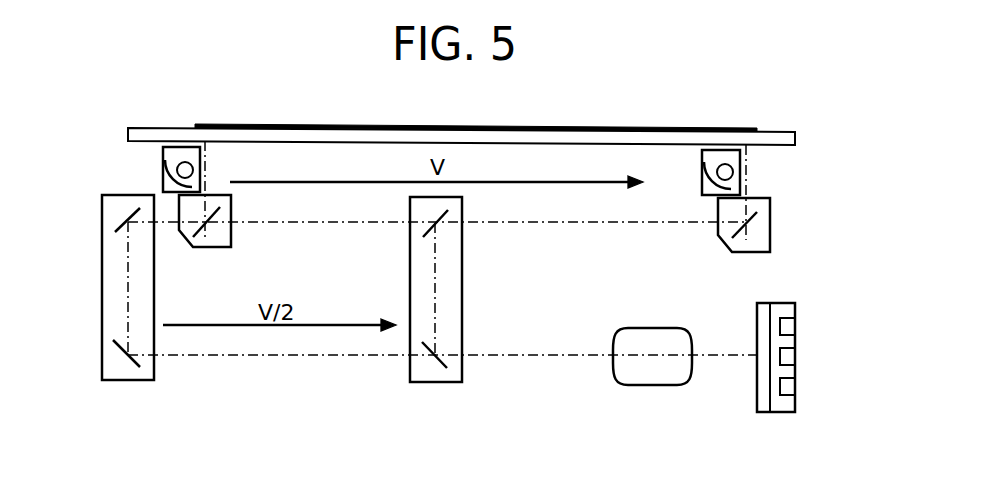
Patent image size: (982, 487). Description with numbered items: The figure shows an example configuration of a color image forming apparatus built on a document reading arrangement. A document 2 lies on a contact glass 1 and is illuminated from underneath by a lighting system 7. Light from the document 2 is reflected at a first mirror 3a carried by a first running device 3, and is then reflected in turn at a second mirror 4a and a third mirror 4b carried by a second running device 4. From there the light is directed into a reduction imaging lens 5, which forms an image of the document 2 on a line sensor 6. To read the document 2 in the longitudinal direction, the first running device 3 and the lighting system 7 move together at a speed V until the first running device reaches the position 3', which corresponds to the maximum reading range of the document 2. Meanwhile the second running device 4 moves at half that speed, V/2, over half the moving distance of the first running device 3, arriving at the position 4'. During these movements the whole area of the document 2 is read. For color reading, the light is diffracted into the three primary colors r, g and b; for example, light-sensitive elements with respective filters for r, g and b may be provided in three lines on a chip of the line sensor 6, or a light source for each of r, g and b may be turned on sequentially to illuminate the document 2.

The contact glass 1 is at (143, 128).
The document 2 is at (230, 124).
The first running device 3 is at (225, 218).
The position of the first running device 3' is at (768, 220).
The first mirror 3a is at (206, 225).
The second running device 4 is at (107, 287).
The position of the second running device 4' is at (458, 289).
The second mirror 4a is at (118, 222).
The third mirror 4b is at (120, 351).
The reduction imaging lens 5 is at (668, 328).
The line sensor 6 is at (785, 303).
The lighting system 7 is at (163, 182).
The red color component r is at (795, 327).
The green color component g is at (795, 357).
The blue color component b is at (795, 385).